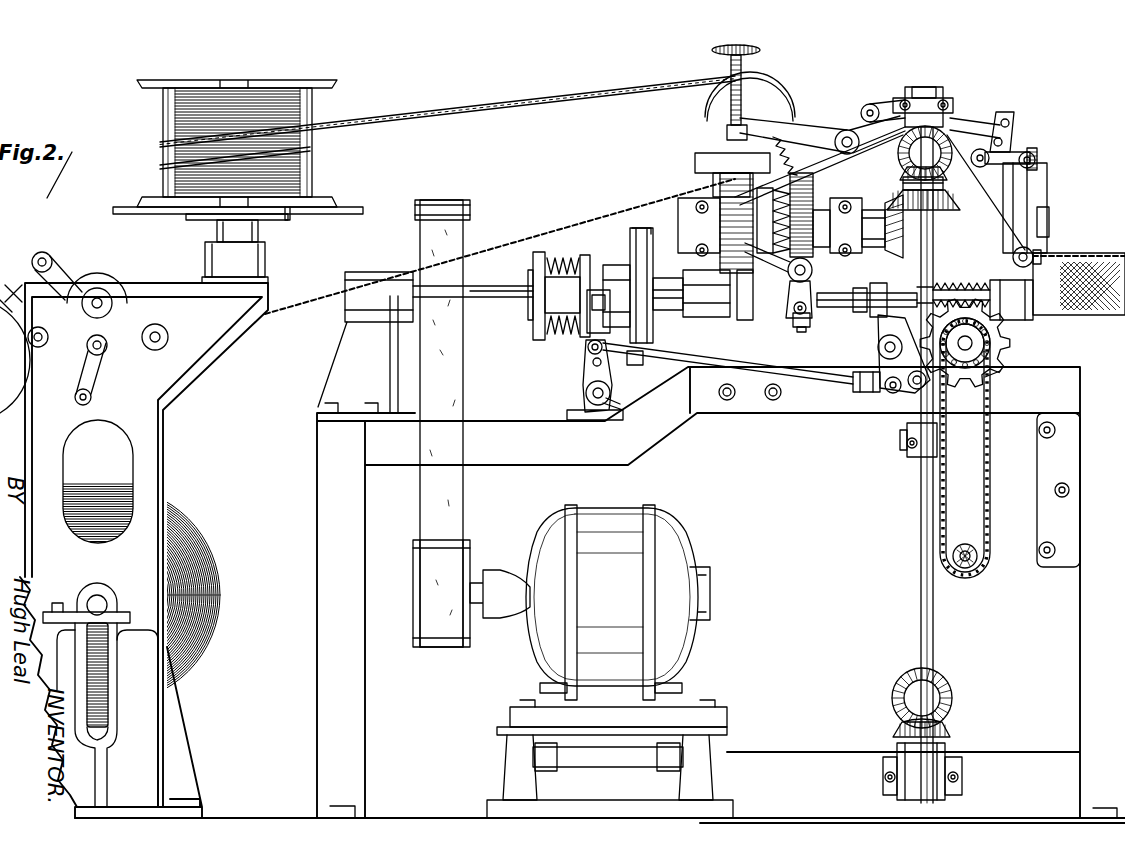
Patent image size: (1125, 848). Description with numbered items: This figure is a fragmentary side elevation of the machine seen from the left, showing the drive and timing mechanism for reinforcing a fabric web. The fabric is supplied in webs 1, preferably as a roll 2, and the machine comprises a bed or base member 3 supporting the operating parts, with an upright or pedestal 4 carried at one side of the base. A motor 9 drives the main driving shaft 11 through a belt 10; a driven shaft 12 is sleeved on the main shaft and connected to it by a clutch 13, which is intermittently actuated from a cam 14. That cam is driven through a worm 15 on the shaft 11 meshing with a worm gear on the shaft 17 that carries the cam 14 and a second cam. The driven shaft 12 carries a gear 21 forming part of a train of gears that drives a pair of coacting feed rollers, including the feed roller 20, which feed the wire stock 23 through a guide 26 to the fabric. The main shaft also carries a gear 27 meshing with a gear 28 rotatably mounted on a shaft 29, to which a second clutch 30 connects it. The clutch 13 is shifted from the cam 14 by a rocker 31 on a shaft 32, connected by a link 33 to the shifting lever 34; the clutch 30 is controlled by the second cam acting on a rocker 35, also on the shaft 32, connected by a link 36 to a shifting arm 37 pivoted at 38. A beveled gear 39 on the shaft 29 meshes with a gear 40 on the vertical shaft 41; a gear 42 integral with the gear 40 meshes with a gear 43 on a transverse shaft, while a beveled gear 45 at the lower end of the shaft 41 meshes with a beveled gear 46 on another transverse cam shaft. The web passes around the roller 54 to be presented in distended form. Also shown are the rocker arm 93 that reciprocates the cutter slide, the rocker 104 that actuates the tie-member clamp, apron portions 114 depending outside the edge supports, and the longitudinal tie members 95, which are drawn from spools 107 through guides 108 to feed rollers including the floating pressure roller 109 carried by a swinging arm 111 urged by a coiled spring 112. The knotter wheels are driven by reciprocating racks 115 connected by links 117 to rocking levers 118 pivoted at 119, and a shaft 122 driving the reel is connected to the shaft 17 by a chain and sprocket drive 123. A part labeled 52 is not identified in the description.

The webs 1 is at (305, 312).
The roll 2 is at (205, 548).
The bed or base member 3 is at (22, 300).
The upright or pedestal 4 is at (1080, 645).
The motor 9 is at (628, 510).
The belt 10 is at (458, 488).
The main driving shaft 11 is at (510, 300).
The driven shaft 12 is at (695, 318).
The clutch 13 is at (640, 228).
The cam 14 is at (1007, 343).
The worm 15 is at (985, 290).
The shaft 17 is at (990, 376).
The feed roller 20 is at (1049, 196).
The gear 21 is at (801, 332).
The wire stock 23 is at (1033, 260).
The guide 26 is at (1030, 250).
The gear 27 is at (858, 312).
The gear 28 is at (813, 195).
The shaft 29 is at (695, 196).
The clutch 30 is at (790, 215).
The rocker 31 is at (885, 400).
The shaft 32 is at (855, 392).
The link 33 is at (797, 385).
The shifting lever 34 is at (590, 346).
The rocker 35 is at (925, 278).
The link 36 is at (870, 300).
The shifting arm 37 is at (788, 318).
The pivot 38 is at (812, 270).
The beveled gear 39 is at (905, 226).
The gear 40 is at (950, 205).
The vertical shaft 41 is at (918, 480).
The gear 42 is at (905, 150).
The gear 43 is at (945, 118).
The beveled gear 45 is at (950, 732).
The beveled gear 46 is at (952, 693).
The handwheel 52 is at (760, 50).
The roller 54 is at (100, 272).
The rocker arm 93 is at (1047, 170).
The longitudinal tie members 95 is at (455, 108).
The rocker 104 is at (1040, 152).
The spools 107 is at (277, 100).
The guides 108 is at (768, 78).
The feed roller 109 is at (712, 123).
The swinging arm 111 is at (843, 130).
The coiled spring 112 is at (803, 134).
The apron portions 114 is at (1075, 312).
The reciprocating racks 115 is at (1018, 150).
The links 117 is at (1018, 115).
The rocking levers 118 is at (980, 130).
The pivot 119 is at (870, 104).
The shaft 122 is at (965, 568).
The chain and sprocket drive 123 is at (990, 470).